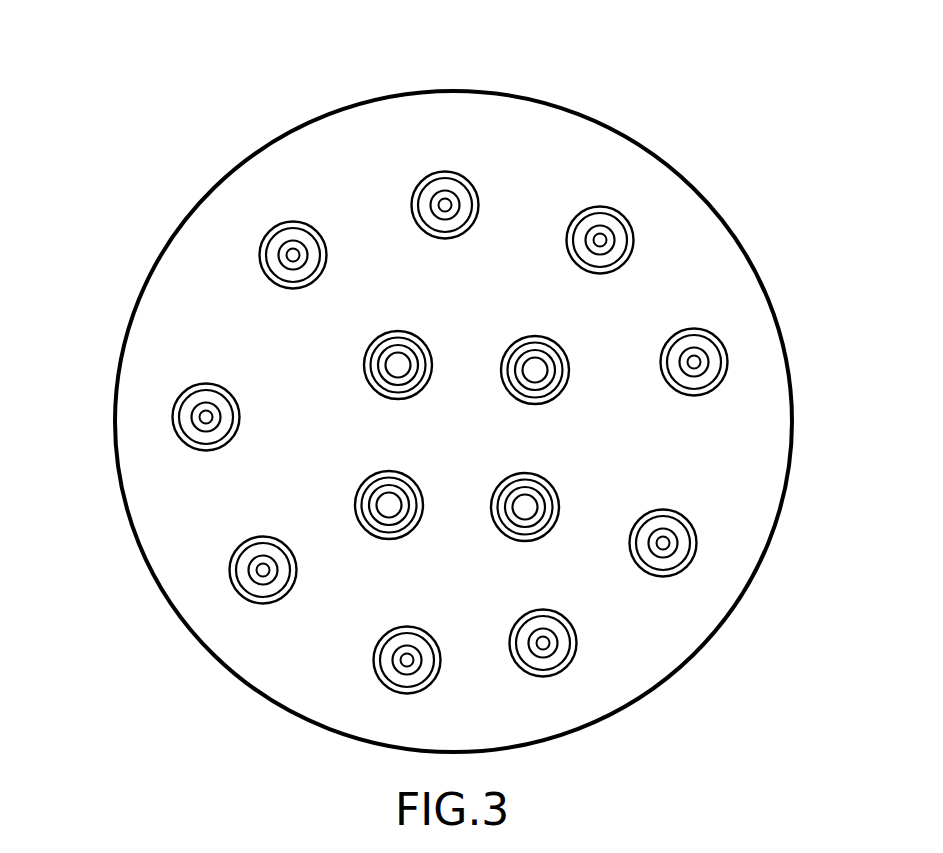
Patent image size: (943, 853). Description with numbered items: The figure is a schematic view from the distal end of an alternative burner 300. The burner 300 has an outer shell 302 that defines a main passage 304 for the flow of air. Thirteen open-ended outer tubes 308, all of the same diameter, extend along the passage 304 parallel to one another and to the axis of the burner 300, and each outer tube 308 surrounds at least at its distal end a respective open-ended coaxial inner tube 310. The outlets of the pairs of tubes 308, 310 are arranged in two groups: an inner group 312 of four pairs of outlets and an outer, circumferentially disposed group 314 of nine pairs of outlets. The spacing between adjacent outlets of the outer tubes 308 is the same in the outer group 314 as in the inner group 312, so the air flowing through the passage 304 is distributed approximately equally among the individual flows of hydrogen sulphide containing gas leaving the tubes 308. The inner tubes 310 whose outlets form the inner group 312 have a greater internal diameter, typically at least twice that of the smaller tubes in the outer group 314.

The burner 300 is at (252, 129).
The outer shell 302 is at (148, 572).
The main passage 304 is at (200, 494).
The outer tube 308 is at (418, 185).
The inner tube 310 is at (450, 197).
The inner group 312 is at (456, 508).
The outer group 314 is at (702, 475).